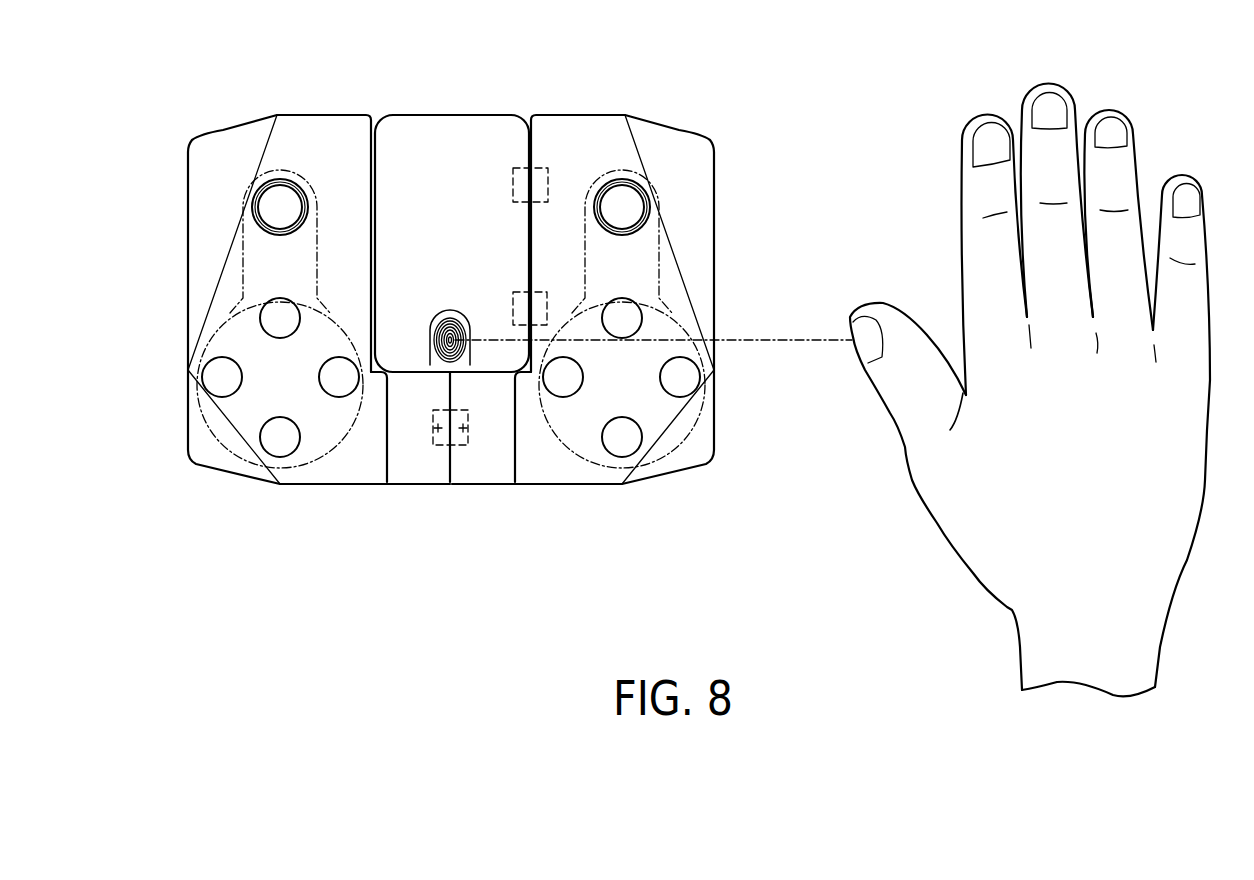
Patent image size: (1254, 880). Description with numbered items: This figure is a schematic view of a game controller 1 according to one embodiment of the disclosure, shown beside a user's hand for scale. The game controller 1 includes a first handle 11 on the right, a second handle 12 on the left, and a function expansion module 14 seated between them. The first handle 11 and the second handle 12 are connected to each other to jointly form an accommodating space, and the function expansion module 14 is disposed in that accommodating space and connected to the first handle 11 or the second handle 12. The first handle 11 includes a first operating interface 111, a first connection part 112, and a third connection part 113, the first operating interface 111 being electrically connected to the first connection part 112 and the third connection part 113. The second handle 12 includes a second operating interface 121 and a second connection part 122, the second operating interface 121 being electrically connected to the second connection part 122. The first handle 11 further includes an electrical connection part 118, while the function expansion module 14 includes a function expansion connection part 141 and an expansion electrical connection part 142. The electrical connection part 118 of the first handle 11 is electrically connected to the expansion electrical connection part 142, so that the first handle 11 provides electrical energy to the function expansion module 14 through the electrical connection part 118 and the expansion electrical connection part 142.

The game controller 1 is at (278, 101).
The first handle 11 is at (677, 150).
The second handle 12 is at (223, 128).
The function expansion module 14 is at (430, 115).
The first operating interface 111 is at (657, 253).
The first connection part 112 is at (468, 426).
The third connection part 113 is at (548, 310).
The electrical connection part 118 is at (548, 185).
The second operating interface 121 is at (243, 253).
The second connection part 122 is at (432, 426).
The function expansion connection part 141 is at (513, 306).
The expansion electrical connection part 142 is at (512, 183).